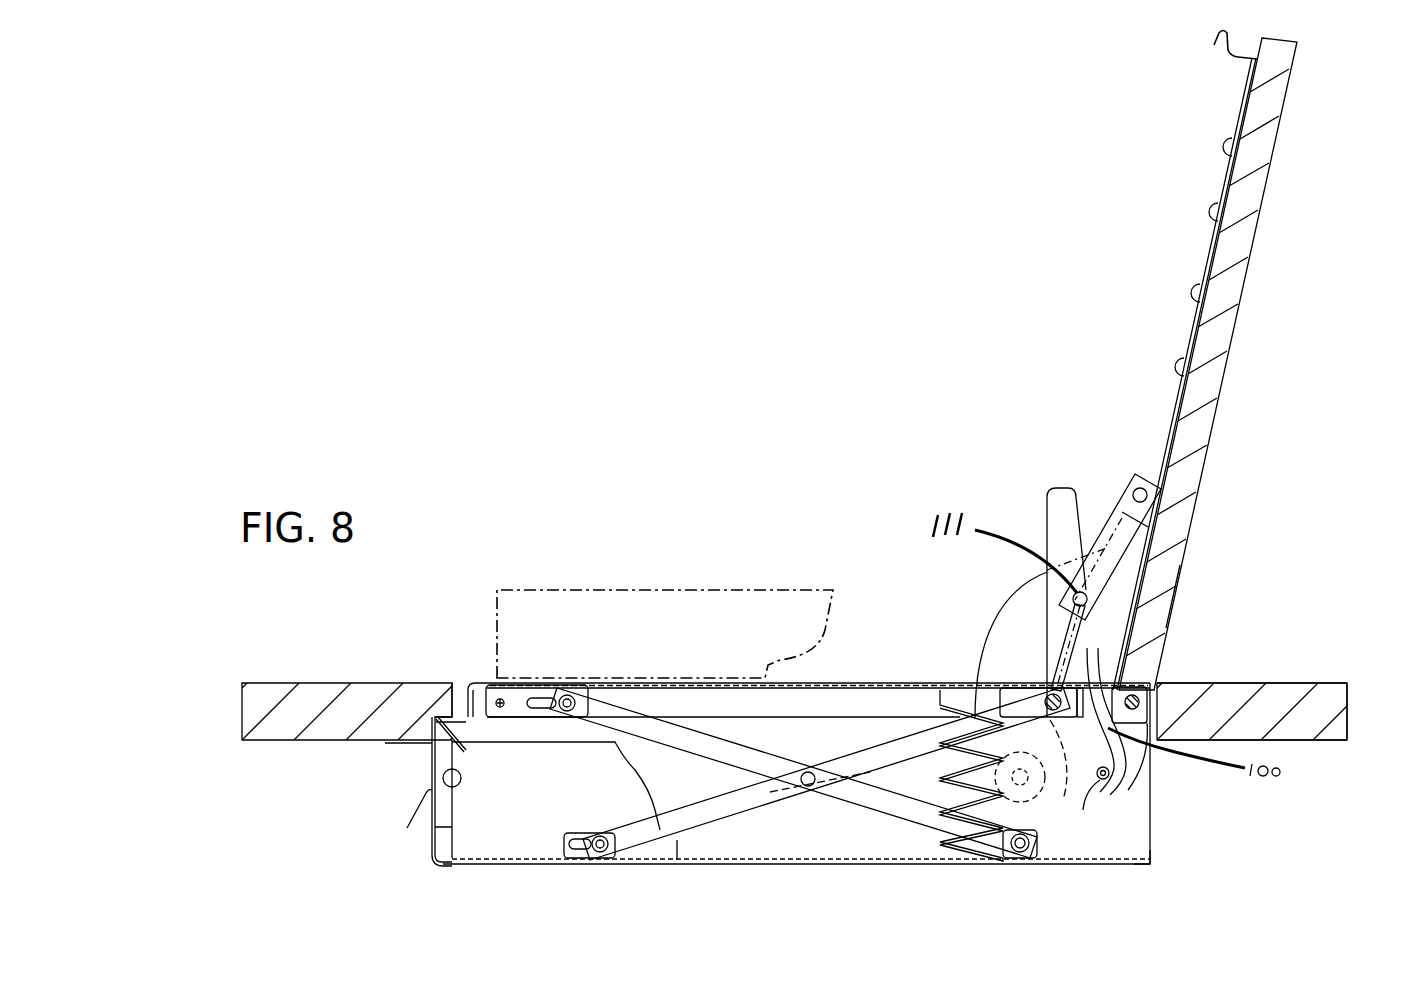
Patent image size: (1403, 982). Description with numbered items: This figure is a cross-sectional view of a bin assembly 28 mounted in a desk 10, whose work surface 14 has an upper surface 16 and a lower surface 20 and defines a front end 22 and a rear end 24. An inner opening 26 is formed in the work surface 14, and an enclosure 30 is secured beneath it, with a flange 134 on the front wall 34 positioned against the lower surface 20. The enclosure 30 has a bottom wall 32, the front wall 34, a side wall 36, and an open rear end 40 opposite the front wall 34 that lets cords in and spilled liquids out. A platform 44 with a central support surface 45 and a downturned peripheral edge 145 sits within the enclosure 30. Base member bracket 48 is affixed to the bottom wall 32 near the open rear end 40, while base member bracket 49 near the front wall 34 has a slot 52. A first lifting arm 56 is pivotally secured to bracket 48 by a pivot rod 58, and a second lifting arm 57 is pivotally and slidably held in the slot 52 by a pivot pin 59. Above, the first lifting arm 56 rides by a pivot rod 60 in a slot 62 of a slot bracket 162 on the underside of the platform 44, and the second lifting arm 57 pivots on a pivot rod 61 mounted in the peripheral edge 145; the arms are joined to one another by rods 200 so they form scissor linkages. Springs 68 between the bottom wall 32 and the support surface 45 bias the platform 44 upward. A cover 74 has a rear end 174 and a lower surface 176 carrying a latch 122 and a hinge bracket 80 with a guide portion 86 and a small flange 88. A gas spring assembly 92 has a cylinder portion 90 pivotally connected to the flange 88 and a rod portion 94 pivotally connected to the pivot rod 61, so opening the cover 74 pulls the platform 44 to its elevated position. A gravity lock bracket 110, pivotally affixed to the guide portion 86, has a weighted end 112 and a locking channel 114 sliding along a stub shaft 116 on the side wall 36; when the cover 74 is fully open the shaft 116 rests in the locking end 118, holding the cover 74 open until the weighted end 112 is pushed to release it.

The desk 10 is at (1273, 590).
The work surface 14 is at (1334, 660).
The upper surface 16 is at (1290, 683).
The lower surface 20 is at (1290, 742).
The front end 22 is at (242, 700).
The rear end 24 is at (1347, 700).
The inner opening 26 is at (430, 690).
The bin assembly 28 is at (600, 866).
The enclosure 30 is at (500, 868).
The bottom wall 32 is at (1138, 870).
The front wall 34 is at (433, 835).
The side wall 36 is at (1150, 805).
The open rear end 40 is at (1165, 796).
The platform 44 is at (655, 680).
The central support surface 45 is at (602, 683).
The base member bracket 48 is at (1033, 852).
The base member bracket 49 is at (572, 840).
The slot 52 is at (574, 840).
The first lifting arm 56 is at (766, 762).
The second lifting arm 57 is at (740, 812).
The pivot rod 58 is at (1020, 860).
The pivot pin 59 is at (600, 855).
The pivot rod 60 is at (567, 713).
The pivot rod 61 is at (1045, 700).
The slot 62 is at (540, 712).
The springs 68 is at (955, 782).
The cover 74 is at (1302, 194).
The hinge bracket 80 is at (1000, 615).
The guide portion 86 is at (1033, 602).
The small flange 88 is at (1152, 480).
The cylinder portion 90 is at (1124, 520).
The gas spring assembly 92 is at (1125, 565).
The rod portion 94 is at (1070, 633).
The gravity lock bracket 110 is at (1040, 508).
The weighted end 112 is at (1062, 490).
The locking channel 114 is at (1118, 768).
The stub shaft 116 is at (1108, 779).
The locking end 118 is at (1100, 780).
The latch 122 is at (1202, 36).
The flange 134 is at (398, 745).
The peripheral edge 145 is at (471, 690).
The slot bracket 162 is at (528, 700).
The rear end 174 is at (1140, 735).
The lower surface 176 is at (1243, 117).
The rods 200 is at (802, 787).